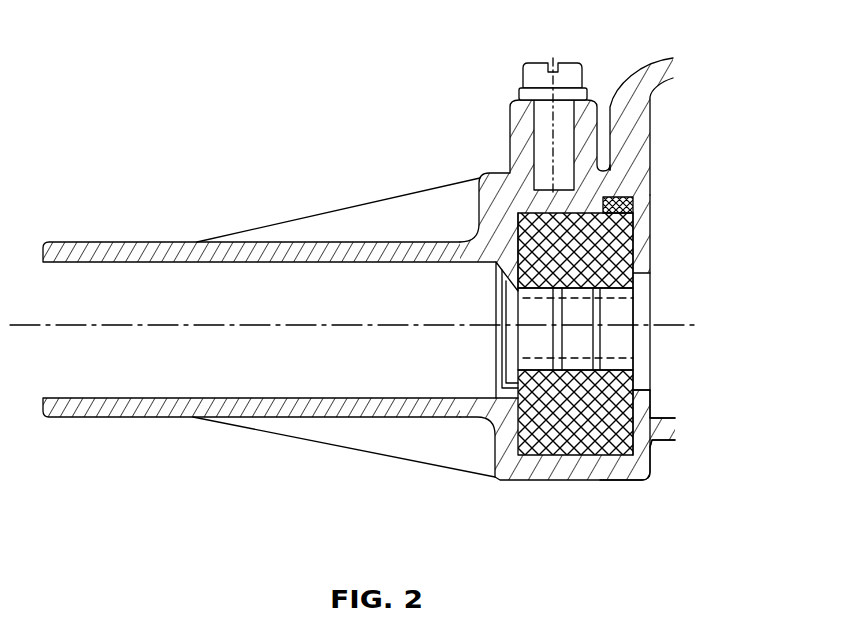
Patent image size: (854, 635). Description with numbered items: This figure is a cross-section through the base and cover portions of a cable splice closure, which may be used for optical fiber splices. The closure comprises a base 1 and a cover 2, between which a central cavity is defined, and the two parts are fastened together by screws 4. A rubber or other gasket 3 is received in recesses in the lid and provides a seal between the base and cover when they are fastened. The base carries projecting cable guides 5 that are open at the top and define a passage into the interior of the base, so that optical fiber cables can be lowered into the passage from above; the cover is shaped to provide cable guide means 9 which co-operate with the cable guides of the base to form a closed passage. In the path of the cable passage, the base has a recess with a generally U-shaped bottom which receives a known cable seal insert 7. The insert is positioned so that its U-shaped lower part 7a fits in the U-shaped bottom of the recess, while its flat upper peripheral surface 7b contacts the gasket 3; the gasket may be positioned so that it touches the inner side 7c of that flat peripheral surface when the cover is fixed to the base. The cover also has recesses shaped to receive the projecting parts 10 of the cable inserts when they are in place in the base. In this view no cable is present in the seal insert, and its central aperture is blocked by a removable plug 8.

The base 1 is at (566, 482).
The cover 2 is at (637, 76).
The gasket 3 is at (628, 195).
The screws 4 is at (545, 63).
The cable guides 5 is at (137, 418).
The cable seal insert 7 is at (545, 425).
The U-shaped lower part 7a is at (645, 478).
The flat upper peripheral surface 7b is at (528, 215).
The inner side of flat peripheral surface 7c is at (612, 235).
The removable plug 8 is at (628, 332).
The cable guide means 9 is at (217, 242).
The projecting parts 10 is at (612, 262).